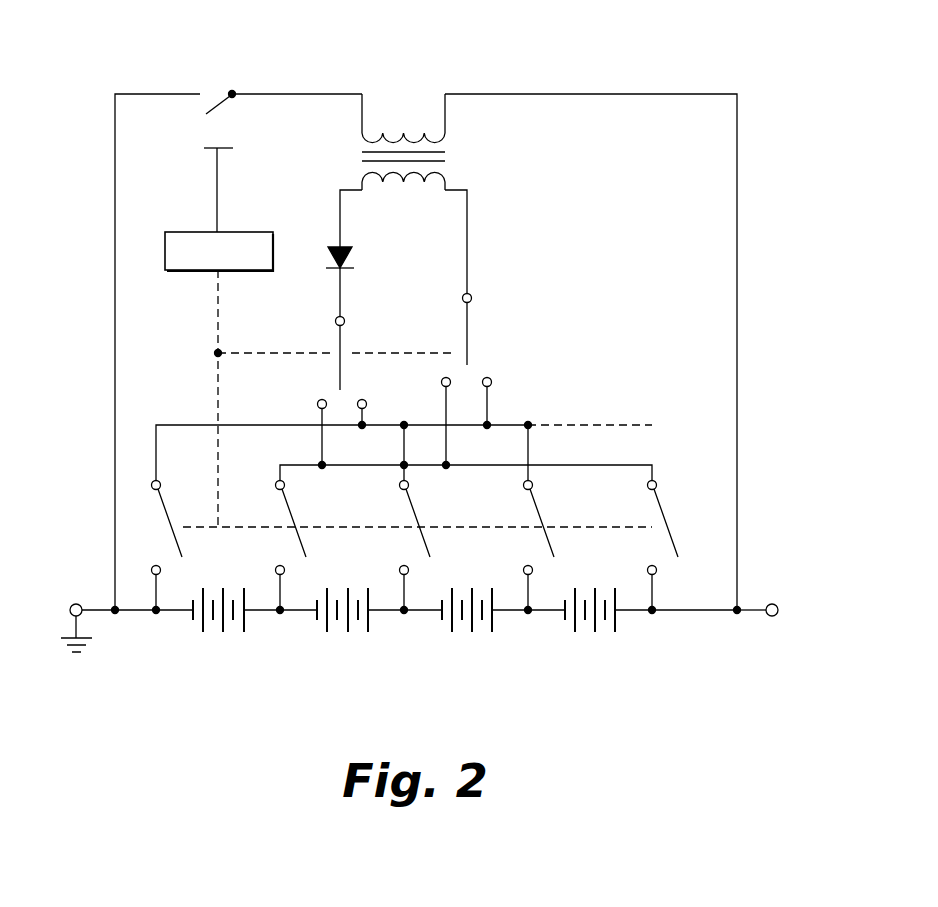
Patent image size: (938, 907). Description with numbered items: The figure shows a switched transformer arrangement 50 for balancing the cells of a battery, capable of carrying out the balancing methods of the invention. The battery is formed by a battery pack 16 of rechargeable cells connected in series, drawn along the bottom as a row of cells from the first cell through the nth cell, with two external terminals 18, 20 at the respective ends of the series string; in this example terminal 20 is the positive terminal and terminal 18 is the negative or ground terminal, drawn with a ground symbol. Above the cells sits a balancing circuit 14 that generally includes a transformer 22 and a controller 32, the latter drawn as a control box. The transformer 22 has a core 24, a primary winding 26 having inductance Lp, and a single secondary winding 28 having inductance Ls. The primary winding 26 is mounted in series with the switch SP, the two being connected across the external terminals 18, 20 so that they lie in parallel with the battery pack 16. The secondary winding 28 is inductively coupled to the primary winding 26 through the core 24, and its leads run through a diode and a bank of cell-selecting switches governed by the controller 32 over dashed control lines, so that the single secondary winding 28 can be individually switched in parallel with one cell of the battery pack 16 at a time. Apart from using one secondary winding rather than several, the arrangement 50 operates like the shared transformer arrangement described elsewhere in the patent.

The switched transformer arrangement 50 is at (727, 56).
The balancing circuit 14 is at (284, 161).
The transformer 22 is at (461, 156).
The primary winding 26 is at (356, 136).
The core 24 is at (362, 168).
The secondary winding 28 is at (470, 190).
The controller 32 is at (194, 232).
The battery pack 16 is at (403, 651).
The external terminal 18 is at (76, 603).
The external terminal 20 is at (773, 603).